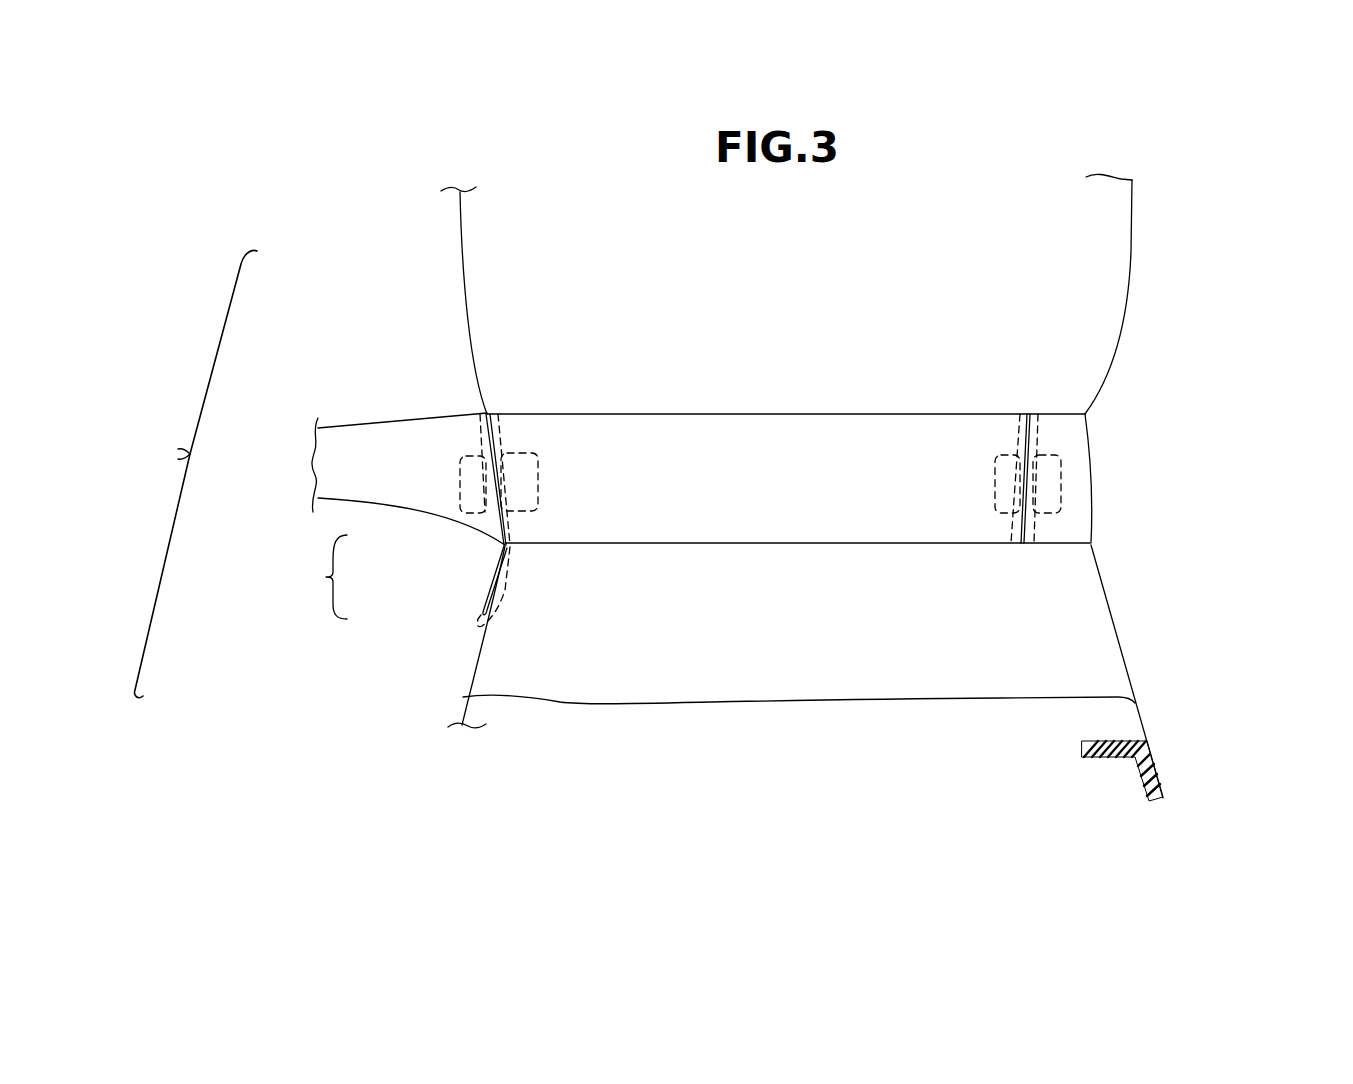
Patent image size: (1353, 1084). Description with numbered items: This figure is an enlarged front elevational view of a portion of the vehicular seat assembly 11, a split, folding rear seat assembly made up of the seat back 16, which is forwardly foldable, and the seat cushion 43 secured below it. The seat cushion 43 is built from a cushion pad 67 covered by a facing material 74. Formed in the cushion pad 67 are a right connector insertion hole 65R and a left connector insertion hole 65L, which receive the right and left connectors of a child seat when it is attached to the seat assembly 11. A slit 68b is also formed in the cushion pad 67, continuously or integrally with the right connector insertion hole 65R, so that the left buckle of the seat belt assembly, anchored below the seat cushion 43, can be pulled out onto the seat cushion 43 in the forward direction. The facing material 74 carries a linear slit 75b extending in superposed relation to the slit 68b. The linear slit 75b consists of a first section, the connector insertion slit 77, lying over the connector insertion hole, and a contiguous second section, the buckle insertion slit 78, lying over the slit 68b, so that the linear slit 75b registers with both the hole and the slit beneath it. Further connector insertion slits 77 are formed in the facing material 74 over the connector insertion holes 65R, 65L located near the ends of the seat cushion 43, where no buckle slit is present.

The seat assembly 11 is at (196, 473).
The seat back 16 is at (367, 280).
The seat cushion 43 is at (731, 712).
The right connector insertion hole 65R is at (537, 486).
The left connector insertion hole 65L is at (1060, 478).
The cushion pad 67 is at (1113, 760).
The slit 68b is at (514, 580).
The facing material 74 is at (1008, 648).
The linear slit 75b is at (306, 577).
The connector insertion slit 77 is at (487, 497).
The buckle insertion slit 78 is at (507, 584).